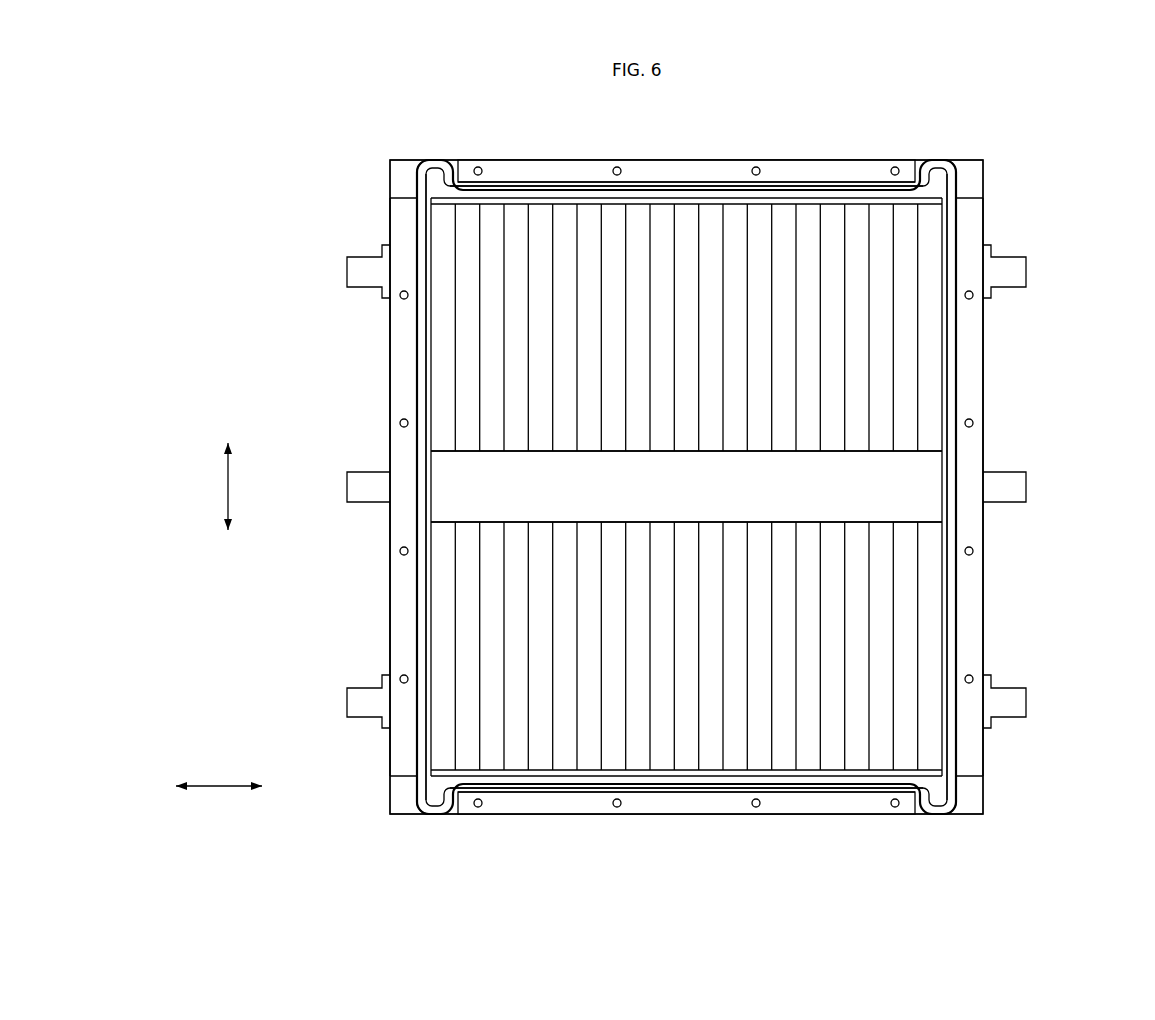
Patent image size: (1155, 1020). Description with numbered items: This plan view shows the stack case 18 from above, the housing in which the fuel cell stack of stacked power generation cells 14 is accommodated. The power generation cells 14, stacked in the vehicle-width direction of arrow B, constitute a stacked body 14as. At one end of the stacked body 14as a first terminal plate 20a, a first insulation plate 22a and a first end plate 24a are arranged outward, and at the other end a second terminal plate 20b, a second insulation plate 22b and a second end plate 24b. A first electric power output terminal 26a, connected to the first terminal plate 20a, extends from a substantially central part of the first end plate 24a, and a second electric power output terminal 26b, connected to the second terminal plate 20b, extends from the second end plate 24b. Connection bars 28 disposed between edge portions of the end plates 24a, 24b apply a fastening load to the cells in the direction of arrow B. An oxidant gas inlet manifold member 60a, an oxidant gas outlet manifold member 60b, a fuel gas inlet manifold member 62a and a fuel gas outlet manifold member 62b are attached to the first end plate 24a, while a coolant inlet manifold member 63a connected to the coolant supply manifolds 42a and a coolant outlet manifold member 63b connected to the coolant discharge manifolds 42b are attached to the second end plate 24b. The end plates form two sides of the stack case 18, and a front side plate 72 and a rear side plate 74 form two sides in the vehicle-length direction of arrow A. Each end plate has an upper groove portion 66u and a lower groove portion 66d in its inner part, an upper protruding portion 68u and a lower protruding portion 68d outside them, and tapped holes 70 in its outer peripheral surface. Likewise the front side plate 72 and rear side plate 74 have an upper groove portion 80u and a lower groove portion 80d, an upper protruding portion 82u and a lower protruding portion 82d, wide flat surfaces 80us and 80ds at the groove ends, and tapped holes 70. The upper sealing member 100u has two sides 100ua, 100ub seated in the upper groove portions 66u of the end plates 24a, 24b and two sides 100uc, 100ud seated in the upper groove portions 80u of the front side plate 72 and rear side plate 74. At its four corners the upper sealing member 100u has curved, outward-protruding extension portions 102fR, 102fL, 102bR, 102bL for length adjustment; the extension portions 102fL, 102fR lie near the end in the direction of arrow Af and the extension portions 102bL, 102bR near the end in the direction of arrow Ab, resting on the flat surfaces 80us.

The stack case 18 is at (196, 208).
The power generation cell 14 is at (862, 541).
The stacked body 14as is at (1057, 540).
The first terminal plate 20a is at (907, 330).
The second terminal plate 20b is at (466, 578).
The first insulation plate 22a is at (932, 345).
The second insulation plate 22b is at (442, 598).
The first end plate 24a is at (990, 380).
The second end plate 24b is at (388, 652).
The first electric power output terminal 26a is at (1018, 485).
The second electric power output terminal 26b is at (356, 485).
The connection bar 28 is at (443, 512).
The coolant supply manifold 42a is at (356, 268).
The coolant discharge manifold 42b is at (356, 698).
The oxidant gas inlet manifold member 60a is at (1061, 271).
The oxidant gas outlet manifold member 60b is at (1018, 700).
The fuel gas inlet manifold member 62a is at (1018, 268).
The fuel gas outlet manifold member 62b is at (1062, 701).
The coolant inlet manifold member 63a is at (306, 271).
The coolant outlet manifold member 63b is at (306, 701).
The upper groove portion 66u is at (685, 487).
The lower groove portion 66d is at (429, 223).
The upper protruding portion 68u is at (685, 487).
The lower protruding portion 68d is at (401, 363).
The tapped hole 70 is at (617, 167).
The front side plate 72 is at (540, 816).
The rear side plate 74 is at (513, 158).
The upper groove portion 80u is at (684, 485).
The lower groove portion 80d is at (853, 197).
The wide flat surface 80us is at (684, 490).
The wide flat surface 80ds is at (405, 166).
The upper protruding portion 82u is at (686, 490).
The lower protruding portion 82d is at (740, 159).
The upper sealing member 100u is at (802, 186).
The side of upper sealing member 100ua is at (955, 654).
The side of upper sealing member 100ub is at (418, 337).
The side of upper sealing member 100uc is at (817, 786).
The side of upper sealing member 100ud is at (567, 190).
The extension portion 102bR is at (422, 173).
The extension portion 102bL is at (951, 173).
The extension portion 102fR is at (420, 802).
The extension portion 102fL is at (953, 802).